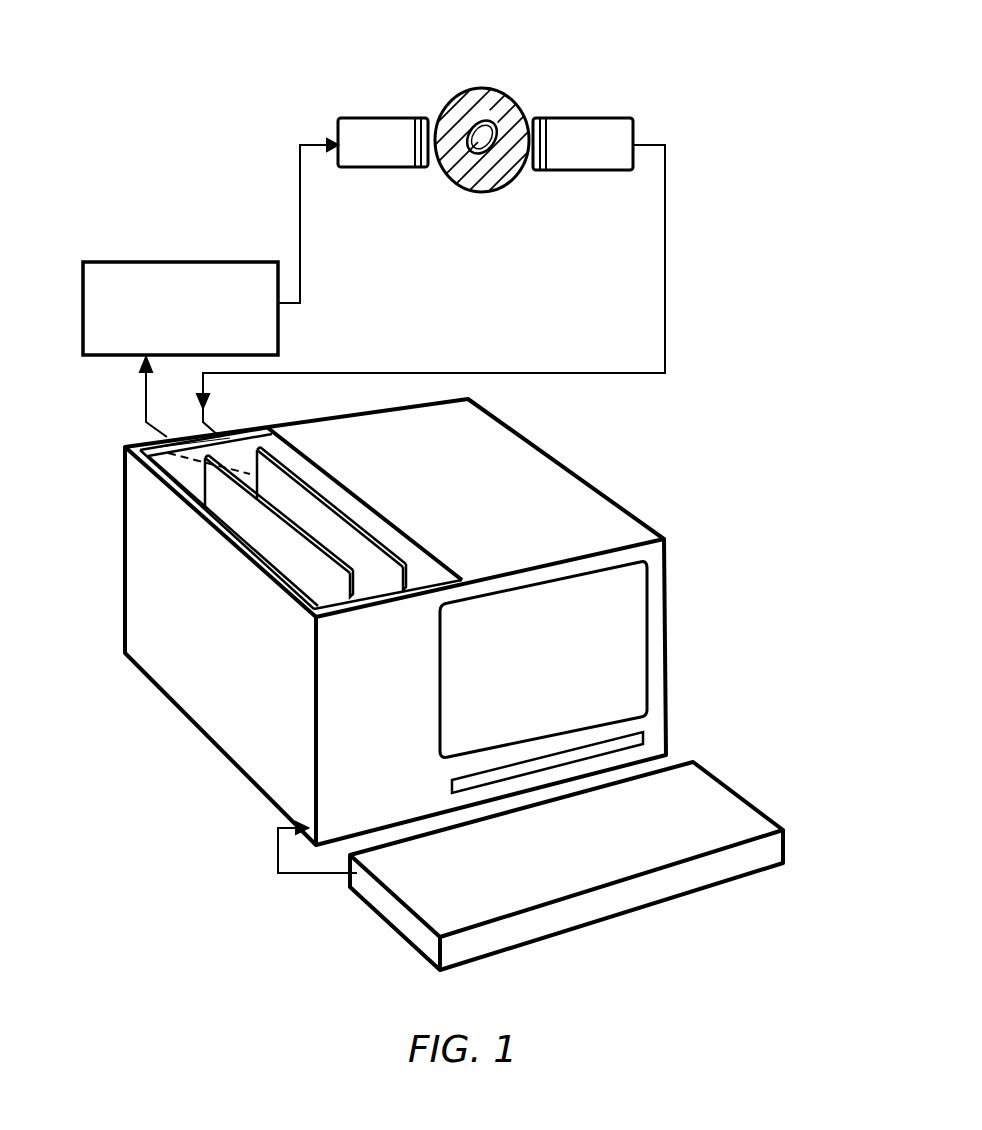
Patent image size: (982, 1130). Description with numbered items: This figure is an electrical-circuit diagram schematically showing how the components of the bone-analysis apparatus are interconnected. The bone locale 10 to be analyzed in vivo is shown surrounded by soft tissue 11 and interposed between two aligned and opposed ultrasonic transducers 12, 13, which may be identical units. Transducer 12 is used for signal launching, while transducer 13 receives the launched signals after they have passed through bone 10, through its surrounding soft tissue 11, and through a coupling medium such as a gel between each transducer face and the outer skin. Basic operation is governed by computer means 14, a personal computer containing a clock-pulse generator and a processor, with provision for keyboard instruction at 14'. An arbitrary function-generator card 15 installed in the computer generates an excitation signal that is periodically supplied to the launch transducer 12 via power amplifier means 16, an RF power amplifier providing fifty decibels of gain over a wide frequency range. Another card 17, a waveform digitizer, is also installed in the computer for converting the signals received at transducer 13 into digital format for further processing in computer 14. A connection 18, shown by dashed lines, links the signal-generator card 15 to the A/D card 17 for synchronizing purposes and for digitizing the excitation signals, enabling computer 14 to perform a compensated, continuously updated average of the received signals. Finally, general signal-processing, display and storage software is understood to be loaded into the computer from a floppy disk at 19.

The bone locale 10 is at (463, 112).
The soft tissue 11 is at (485, 98).
The ultrasonic transducer 12 is at (375, 118).
The ultrasonic transducer 13 is at (585, 117).
The computer means 14 is at (364, 622).
The keyboard 14' is at (554, 866).
The arbitrary function-generator card 15 is at (273, 557).
The power amplifier means 16 is at (168, 262).
The A/D card 17 is at (353, 545).
The connection 18 is at (173, 458).
The floppy disk loading location 19 is at (640, 741).